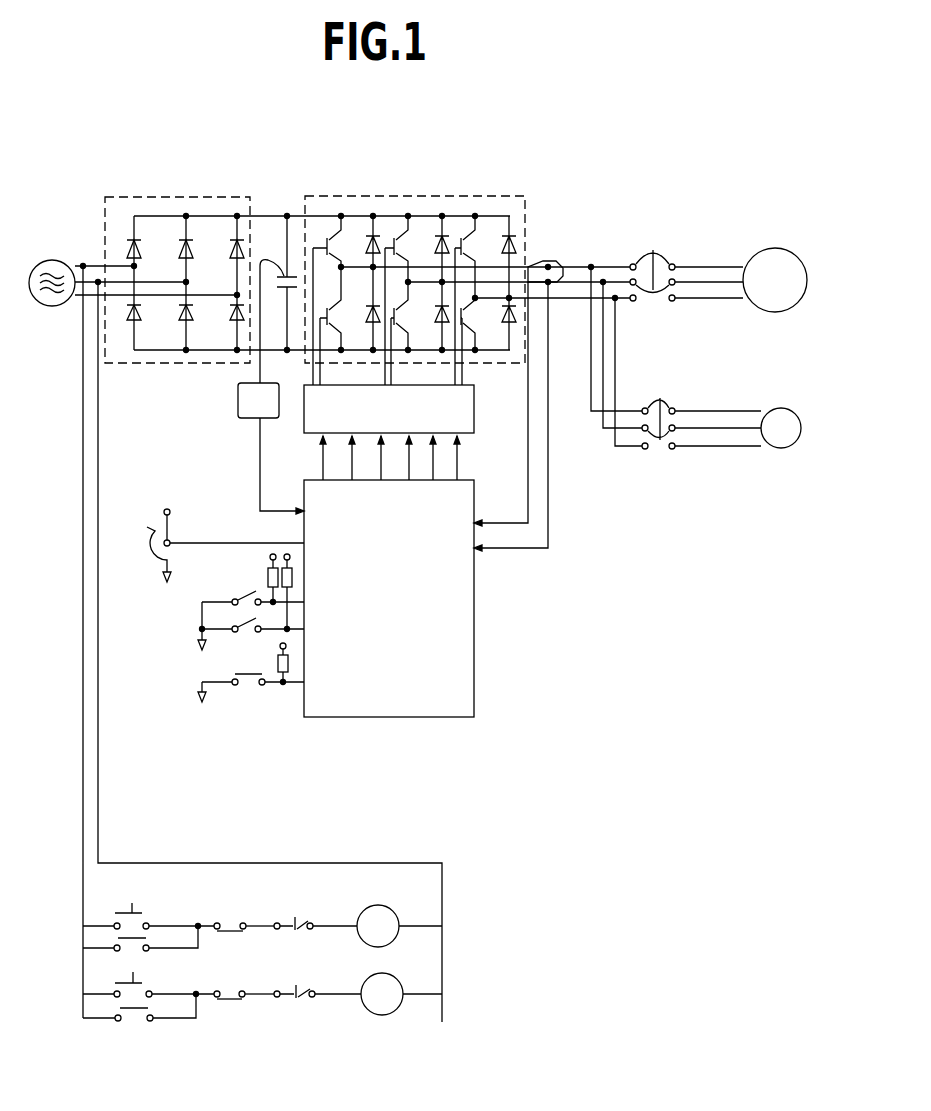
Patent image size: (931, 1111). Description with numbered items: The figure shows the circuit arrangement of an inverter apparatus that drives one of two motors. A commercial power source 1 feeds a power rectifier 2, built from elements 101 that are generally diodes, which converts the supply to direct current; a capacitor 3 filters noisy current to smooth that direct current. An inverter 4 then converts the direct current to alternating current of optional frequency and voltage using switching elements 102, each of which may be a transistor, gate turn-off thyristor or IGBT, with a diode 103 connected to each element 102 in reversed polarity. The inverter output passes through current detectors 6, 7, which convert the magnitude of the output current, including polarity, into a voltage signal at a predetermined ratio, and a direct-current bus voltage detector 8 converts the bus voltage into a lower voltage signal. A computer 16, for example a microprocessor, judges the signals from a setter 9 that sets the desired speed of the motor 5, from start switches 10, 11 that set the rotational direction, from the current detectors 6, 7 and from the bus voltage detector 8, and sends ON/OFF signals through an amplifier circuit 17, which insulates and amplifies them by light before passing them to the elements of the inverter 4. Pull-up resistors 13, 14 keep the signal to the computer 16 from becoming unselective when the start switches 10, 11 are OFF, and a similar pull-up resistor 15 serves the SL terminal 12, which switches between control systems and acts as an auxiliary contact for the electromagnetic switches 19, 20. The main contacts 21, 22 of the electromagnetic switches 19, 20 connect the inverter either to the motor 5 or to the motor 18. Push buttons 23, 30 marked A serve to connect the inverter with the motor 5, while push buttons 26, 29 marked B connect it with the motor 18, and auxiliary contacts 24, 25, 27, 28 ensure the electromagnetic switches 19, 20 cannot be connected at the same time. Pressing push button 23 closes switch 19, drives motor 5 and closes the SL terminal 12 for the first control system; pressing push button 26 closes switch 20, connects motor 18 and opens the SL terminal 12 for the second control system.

The commercial power source 1 is at (56, 261).
The power rectifier 2 is at (307, 265).
The capacitor 3 is at (286, 275).
The inverter 4 is at (415, 277).
The motor 5 is at (765, 248).
The current detector 6 is at (554, 260).
The current detector 7 is at (565, 266).
The direct-current bus voltage detector 8 is at (245, 403).
The setter 9 is at (176, 527).
The start switch 10 is at (252, 591).
The start switch 11 is at (247, 623).
The SL terminal 12 is at (250, 672).
The pull-up resistor 13 is at (268, 576).
The pull-up resistor 14 is at (292, 578).
The pull-up resistor 15 is at (290, 666).
The computer 16 is at (465, 507).
The amplifier circuit 17 is at (463, 421).
The motor 18 is at (779, 408).
The electromagnetic switch 19 is at (385, 906).
The electromagnetic switch 20 is at (396, 986).
The main contact 21 is at (670, 257).
The main contact 22 is at (676, 406).
The push button 23 is at (142, 912).
The auxiliary contact 24 is at (157, 940).
The auxiliary contact 25 is at (228, 918).
The push button 26 is at (157, 983).
The auxiliary contact 27 is at (157, 1010).
The auxiliary contact 28 is at (230, 989).
The push button 29 is at (303, 917).
The push button 30 is at (305, 989).
The element 101 is at (145, 246).
The element 102 is at (331, 257).
The diode 103 is at (383, 243).